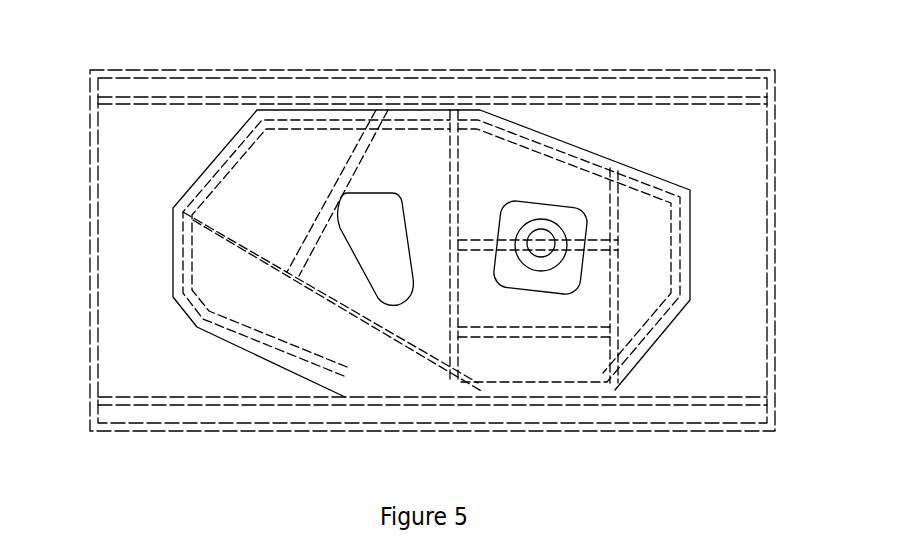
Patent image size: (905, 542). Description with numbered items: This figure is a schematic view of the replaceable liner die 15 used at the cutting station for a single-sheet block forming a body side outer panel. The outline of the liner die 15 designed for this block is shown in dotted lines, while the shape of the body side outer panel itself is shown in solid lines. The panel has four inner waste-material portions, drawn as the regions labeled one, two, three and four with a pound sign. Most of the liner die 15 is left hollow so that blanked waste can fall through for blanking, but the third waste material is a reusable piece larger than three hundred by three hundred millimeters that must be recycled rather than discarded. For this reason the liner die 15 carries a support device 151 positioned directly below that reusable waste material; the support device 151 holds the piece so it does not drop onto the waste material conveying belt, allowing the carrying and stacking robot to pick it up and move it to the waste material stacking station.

The liner die 15 is at (97, 72).
The support device 151 is at (586, 250).